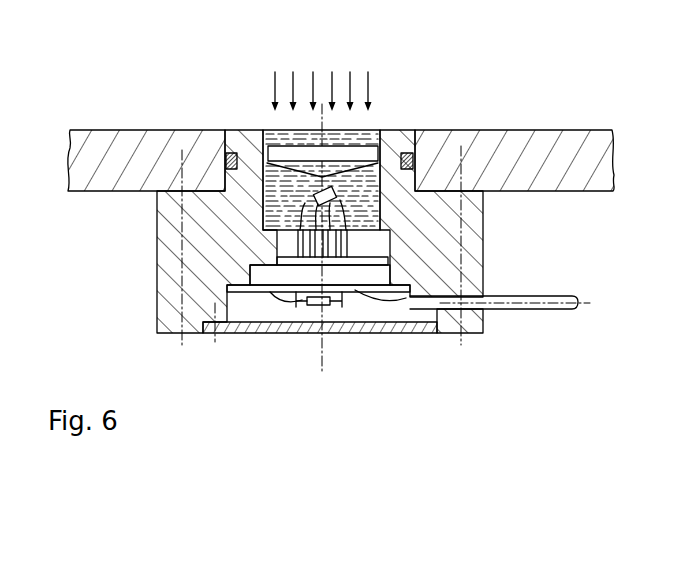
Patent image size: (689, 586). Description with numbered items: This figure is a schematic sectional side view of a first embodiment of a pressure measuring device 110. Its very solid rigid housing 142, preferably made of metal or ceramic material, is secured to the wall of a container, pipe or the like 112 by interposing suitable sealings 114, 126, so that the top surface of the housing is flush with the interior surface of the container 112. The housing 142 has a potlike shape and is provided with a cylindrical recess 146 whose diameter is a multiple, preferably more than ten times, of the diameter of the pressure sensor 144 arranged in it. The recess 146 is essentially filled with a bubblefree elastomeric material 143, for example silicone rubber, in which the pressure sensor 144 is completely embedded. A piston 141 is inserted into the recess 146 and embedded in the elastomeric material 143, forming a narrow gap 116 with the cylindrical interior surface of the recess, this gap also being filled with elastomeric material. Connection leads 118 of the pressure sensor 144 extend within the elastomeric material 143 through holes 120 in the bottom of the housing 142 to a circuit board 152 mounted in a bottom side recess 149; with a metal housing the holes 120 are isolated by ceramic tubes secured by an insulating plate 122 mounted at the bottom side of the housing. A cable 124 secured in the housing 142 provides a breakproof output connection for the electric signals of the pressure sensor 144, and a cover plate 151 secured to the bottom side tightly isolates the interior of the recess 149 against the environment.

The pressure measuring device 110 is at (112, 218).
The container 112 is at (102, 148).
The sealings 114 is at (224, 163).
The narrow gap 116 is at (389, 150).
The connection leads 118 is at (345, 262).
The holes 120 is at (395, 270).
The insulating plate 122 is at (272, 290).
The cable 124 is at (517, 303).
The sealing ring 126 is at (403, 152).
The piston 141 is at (360, 153).
The housing 142 is at (172, 298).
The elastomeric material 143 is at (420, 183).
The pressure sensor 144 is at (283, 130).
The recess 146 is at (342, 190).
The bottom side recess 149 is at (248, 308).
The cover plate 151 is at (388, 300).
The circuit board 152 is at (347, 287).